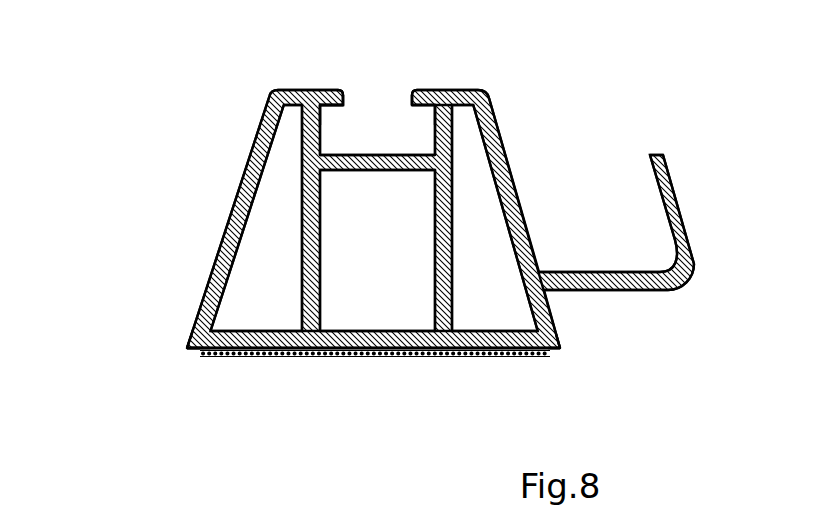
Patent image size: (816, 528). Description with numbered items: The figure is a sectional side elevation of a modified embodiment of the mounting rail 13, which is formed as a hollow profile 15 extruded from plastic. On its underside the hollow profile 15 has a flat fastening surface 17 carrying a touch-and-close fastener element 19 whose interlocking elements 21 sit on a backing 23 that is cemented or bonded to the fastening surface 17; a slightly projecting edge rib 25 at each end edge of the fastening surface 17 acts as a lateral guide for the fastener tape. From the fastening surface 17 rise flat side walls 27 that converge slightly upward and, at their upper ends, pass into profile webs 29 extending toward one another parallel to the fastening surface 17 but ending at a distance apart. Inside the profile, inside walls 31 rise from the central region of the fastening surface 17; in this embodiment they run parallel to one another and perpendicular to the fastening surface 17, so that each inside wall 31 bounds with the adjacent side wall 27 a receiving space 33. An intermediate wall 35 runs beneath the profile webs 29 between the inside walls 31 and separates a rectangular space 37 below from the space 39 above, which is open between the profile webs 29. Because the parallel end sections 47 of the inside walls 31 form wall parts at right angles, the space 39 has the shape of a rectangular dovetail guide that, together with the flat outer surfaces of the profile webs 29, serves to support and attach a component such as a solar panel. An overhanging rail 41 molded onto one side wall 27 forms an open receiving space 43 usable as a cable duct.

The mounting rail 13 is at (145, 316).
The hollow profile 15 is at (270, 96).
The fastening surface 17 is at (247, 352).
The touch-and-close fastener element 19 is at (498, 358).
The interlocking elements 21 is at (405, 358).
The backing 23 is at (195, 356).
The edge rib 25 is at (187, 351).
The side walls 27 is at (237, 198).
The profile webs 29 is at (298, 89).
The inside walls 31 is at (302, 280).
The receiving space 33 is at (272, 251).
The intermediate wall 35 is at (302, 195).
The space 37 is at (376, 255).
The space 39 is at (385, 136).
The overhanging rail 41 is at (691, 272).
The open receiving space 43 is at (605, 213).
The end sections 47 is at (302, 138).